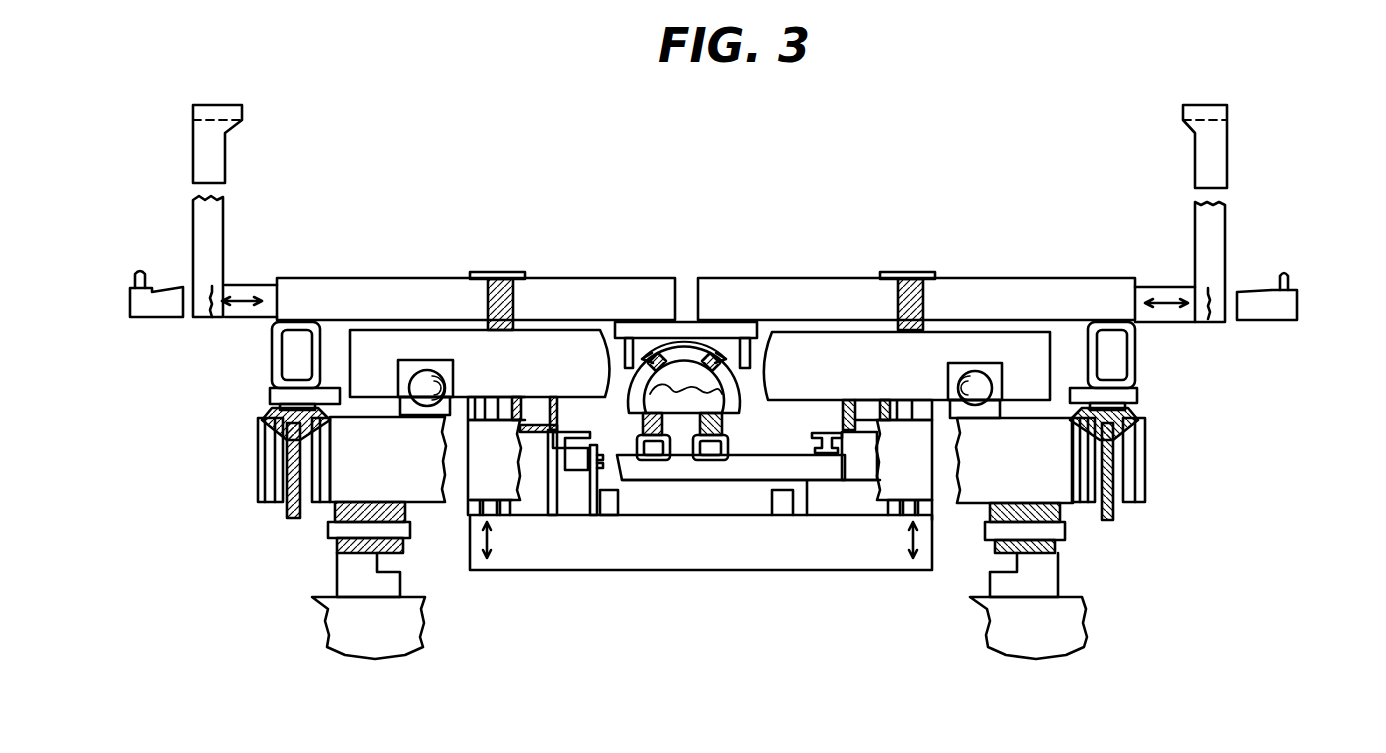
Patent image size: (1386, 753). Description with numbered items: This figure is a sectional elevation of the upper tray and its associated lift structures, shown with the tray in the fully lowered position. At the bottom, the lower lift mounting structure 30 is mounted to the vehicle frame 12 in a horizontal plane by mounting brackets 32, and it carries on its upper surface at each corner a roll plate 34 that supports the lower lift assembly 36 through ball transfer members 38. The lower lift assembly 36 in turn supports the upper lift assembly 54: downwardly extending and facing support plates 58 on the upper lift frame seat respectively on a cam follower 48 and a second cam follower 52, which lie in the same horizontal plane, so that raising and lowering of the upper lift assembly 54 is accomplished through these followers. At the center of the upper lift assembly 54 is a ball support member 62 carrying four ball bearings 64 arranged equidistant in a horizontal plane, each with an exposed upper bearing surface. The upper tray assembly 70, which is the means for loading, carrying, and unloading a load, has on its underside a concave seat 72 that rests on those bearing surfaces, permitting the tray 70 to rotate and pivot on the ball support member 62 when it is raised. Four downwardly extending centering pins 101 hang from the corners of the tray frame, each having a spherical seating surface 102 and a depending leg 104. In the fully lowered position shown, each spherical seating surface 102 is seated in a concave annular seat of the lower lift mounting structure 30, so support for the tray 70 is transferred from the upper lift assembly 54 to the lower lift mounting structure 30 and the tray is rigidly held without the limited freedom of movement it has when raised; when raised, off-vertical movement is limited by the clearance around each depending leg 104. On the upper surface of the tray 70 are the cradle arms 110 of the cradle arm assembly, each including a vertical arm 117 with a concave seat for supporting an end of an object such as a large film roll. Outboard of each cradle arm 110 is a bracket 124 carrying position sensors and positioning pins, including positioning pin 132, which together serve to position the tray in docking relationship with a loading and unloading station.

The frame 12 is at (352, 635).
The lower lift mounting structure 30 is at (258, 496).
The mounting brackets 32 is at (337, 576).
The roll plate 34 is at (415, 410).
The lower lift assembly 36 is at (388, 370).
The ball transfer members 38 is at (440, 381).
The cam follower 48 is at (593, 446).
The cam follower 52 is at (815, 445).
The upper lift assembly 54 is at (683, 570).
The support plates 58 is at (568, 420).
The ball support member 62 is at (718, 412).
The ball bearings 64 is at (663, 362).
The upper tray assembly 70 is at (743, 278).
The concave seat 72 is at (740, 340).
The centering pins 101 is at (270, 413).
The spherical seating surface 102 is at (287, 437).
The depending leg 104 is at (278, 478).
The cradle arms 110 is at (193, 222).
The vertical arm 117 is at (216, 160).
The brackets 124 is at (168, 318).
The positioning pin 132 is at (133, 280).